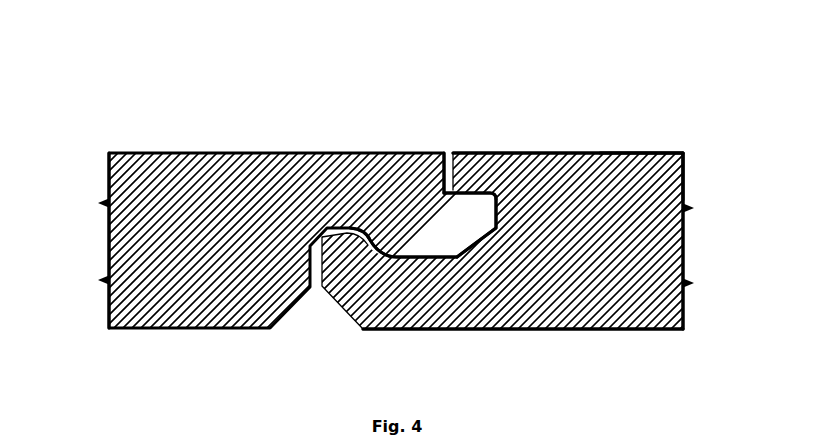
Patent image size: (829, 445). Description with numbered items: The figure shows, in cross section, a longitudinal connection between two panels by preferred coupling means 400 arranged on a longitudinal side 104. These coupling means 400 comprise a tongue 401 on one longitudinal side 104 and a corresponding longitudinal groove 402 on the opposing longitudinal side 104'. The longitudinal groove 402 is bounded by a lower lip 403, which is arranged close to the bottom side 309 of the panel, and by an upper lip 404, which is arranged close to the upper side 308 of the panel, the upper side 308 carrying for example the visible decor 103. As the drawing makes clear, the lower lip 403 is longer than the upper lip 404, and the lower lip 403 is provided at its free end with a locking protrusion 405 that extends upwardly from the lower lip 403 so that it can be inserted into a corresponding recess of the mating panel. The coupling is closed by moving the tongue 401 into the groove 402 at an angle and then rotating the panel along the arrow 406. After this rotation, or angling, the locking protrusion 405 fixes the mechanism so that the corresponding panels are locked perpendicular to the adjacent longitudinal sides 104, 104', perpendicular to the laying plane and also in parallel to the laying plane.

The coupling means 400 is at (361, 114).
The tongue 401 is at (467, 217).
The longitudinal groove 402 is at (480, 253).
The lower lip 403 is at (387, 295).
The upper lip 404 is at (465, 190).
The locking protrusion 405 is at (348, 260).
The arrow 406 is at (262, 78).
The visible decor 103 is at (617, 152).
The longitudinal side 104 is at (64, 240).
The opposing longitudinal side 104' is at (727, 241).
The upper side 308 is at (645, 152).
The bottom side 309 is at (618, 333).